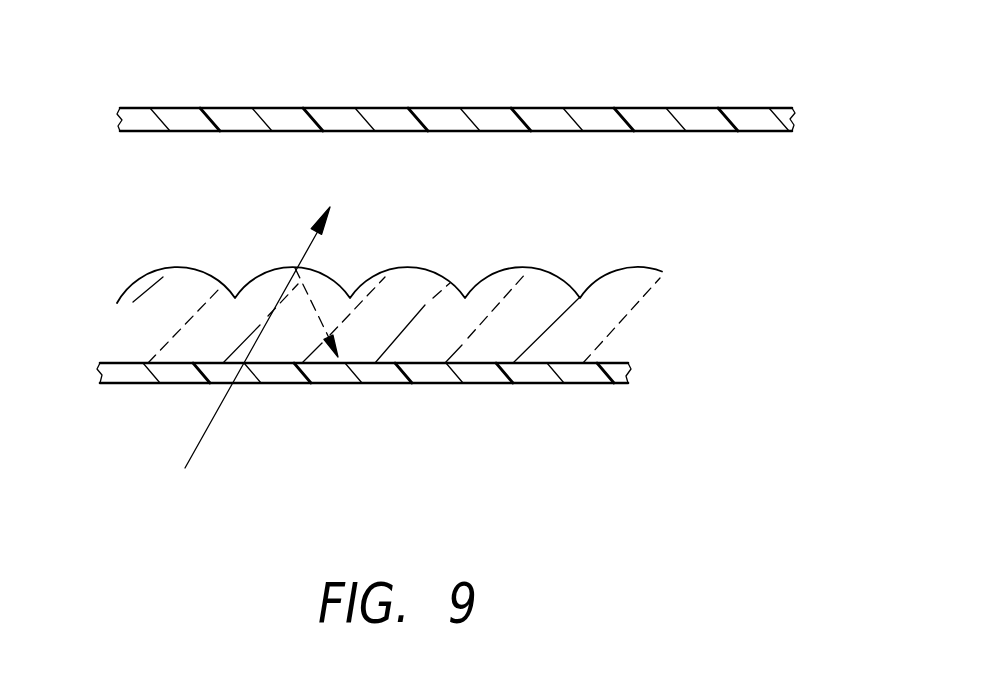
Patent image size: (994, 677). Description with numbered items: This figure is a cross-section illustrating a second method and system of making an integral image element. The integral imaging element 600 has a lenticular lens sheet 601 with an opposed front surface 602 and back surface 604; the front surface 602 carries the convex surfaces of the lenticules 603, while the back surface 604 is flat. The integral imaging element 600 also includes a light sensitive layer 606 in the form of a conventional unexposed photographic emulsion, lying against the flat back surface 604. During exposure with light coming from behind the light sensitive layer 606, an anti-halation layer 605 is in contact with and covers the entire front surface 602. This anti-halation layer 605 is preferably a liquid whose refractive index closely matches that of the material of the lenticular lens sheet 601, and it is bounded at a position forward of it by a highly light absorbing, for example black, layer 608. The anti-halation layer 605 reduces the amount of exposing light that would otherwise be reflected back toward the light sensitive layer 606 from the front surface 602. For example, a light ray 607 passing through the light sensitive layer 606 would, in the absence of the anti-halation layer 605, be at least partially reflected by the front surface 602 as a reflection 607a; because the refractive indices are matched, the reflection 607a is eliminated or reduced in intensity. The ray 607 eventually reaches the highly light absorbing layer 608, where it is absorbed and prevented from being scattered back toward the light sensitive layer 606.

The integral imaging element 600 is at (760, 323).
The lenticular lens sheet 601 is at (570, 328).
The front surface 602 is at (133, 302).
The lenticules 603 is at (162, 268).
The back surface 604 is at (131, 363).
The anti-halation layer 605 is at (687, 182).
The light sensitive layer 606 is at (590, 372).
The light ray 607 is at (215, 412).
The reflection 607a is at (312, 307).
The highly light absorbing layer 608 is at (750, 113).